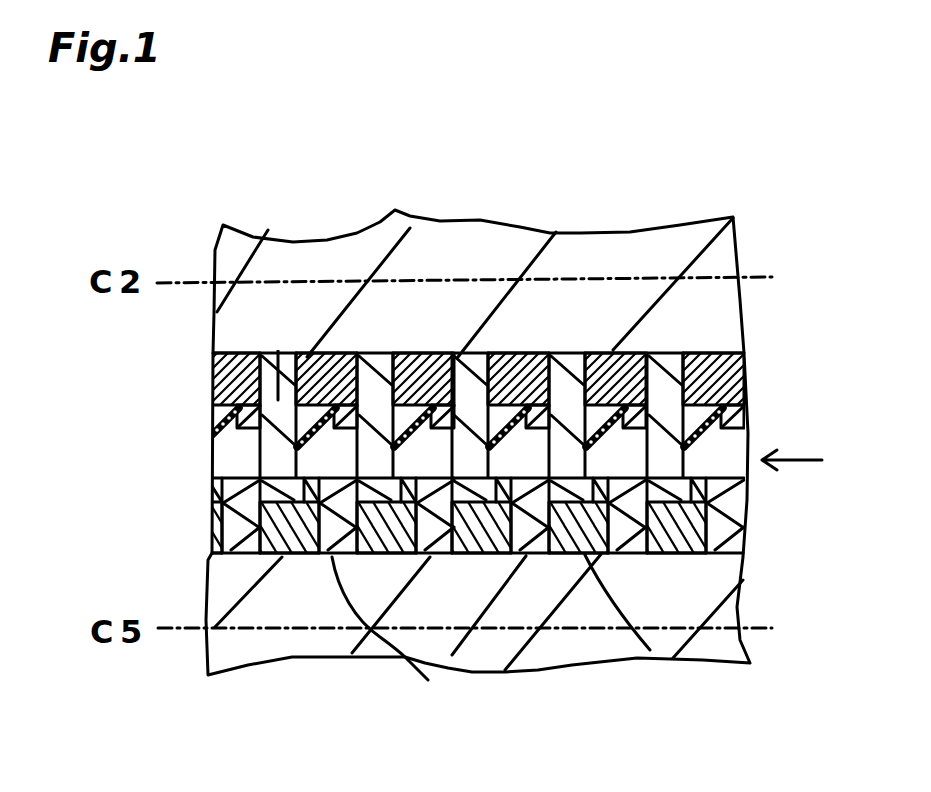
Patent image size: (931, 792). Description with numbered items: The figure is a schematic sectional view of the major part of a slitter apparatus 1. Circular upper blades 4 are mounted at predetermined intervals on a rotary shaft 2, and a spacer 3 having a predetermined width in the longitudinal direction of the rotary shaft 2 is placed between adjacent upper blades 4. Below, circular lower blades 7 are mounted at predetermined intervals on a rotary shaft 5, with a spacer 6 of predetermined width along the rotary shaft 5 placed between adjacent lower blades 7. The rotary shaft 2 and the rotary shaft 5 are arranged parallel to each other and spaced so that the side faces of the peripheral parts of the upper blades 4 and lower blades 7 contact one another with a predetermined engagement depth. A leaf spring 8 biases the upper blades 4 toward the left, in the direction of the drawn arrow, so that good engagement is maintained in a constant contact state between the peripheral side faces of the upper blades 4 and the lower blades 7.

The slitter apparatus 1 is at (732, 165).
The rotary shaft 2 is at (713, 316).
The spacer 3 is at (745, 373).
The upper blade 4 is at (468, 352).
The rotary shaft 5 is at (743, 577).
The spacer 6 is at (647, 557).
The lower blade 7 is at (425, 557).
The leaf spring 8 is at (212, 430).